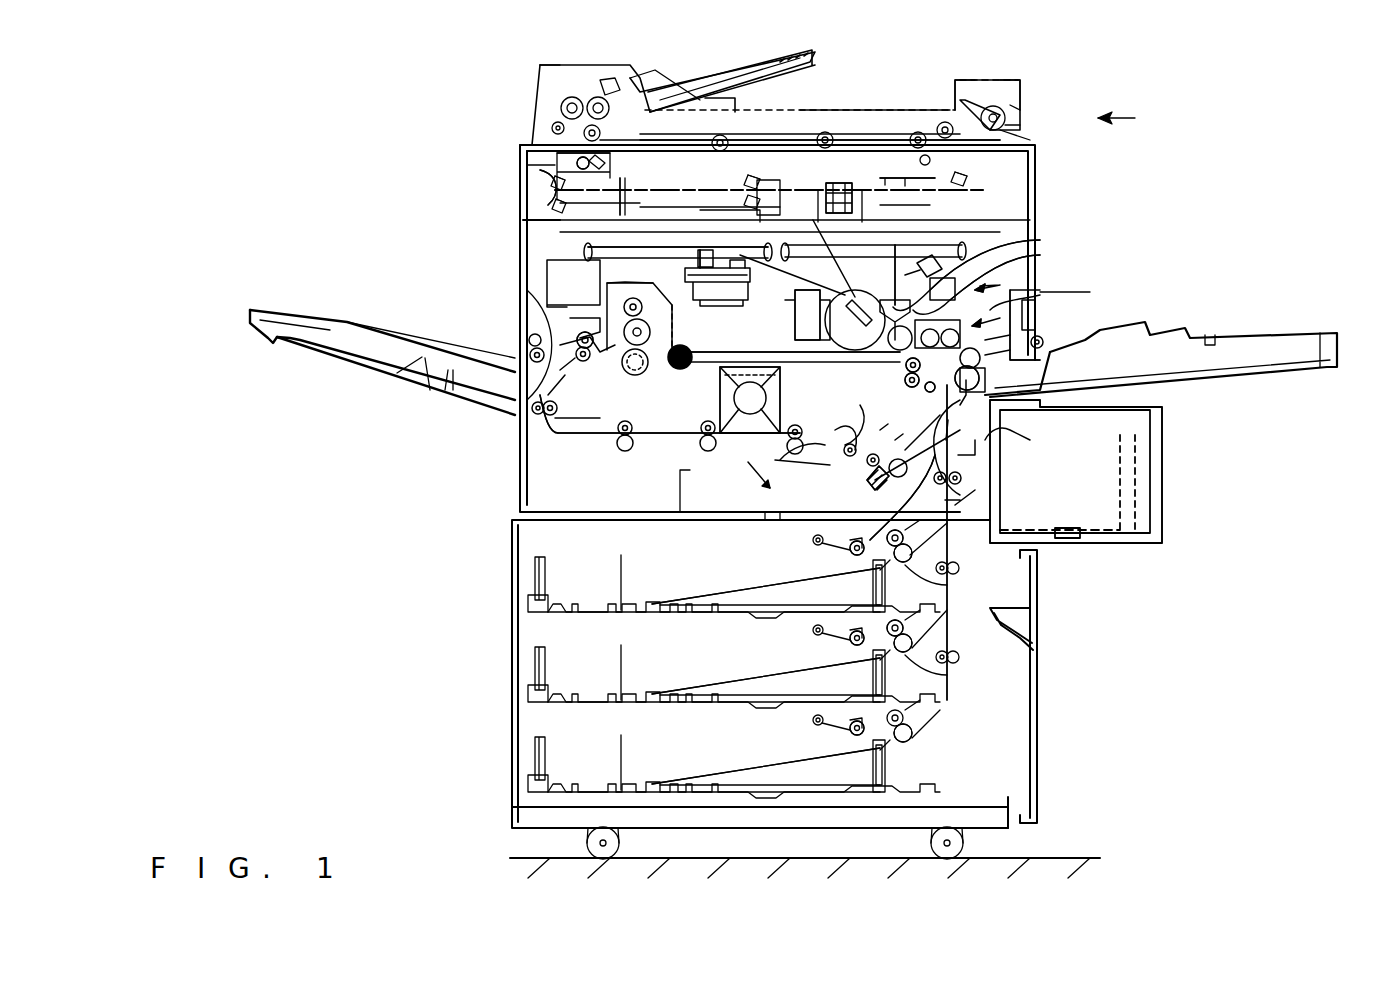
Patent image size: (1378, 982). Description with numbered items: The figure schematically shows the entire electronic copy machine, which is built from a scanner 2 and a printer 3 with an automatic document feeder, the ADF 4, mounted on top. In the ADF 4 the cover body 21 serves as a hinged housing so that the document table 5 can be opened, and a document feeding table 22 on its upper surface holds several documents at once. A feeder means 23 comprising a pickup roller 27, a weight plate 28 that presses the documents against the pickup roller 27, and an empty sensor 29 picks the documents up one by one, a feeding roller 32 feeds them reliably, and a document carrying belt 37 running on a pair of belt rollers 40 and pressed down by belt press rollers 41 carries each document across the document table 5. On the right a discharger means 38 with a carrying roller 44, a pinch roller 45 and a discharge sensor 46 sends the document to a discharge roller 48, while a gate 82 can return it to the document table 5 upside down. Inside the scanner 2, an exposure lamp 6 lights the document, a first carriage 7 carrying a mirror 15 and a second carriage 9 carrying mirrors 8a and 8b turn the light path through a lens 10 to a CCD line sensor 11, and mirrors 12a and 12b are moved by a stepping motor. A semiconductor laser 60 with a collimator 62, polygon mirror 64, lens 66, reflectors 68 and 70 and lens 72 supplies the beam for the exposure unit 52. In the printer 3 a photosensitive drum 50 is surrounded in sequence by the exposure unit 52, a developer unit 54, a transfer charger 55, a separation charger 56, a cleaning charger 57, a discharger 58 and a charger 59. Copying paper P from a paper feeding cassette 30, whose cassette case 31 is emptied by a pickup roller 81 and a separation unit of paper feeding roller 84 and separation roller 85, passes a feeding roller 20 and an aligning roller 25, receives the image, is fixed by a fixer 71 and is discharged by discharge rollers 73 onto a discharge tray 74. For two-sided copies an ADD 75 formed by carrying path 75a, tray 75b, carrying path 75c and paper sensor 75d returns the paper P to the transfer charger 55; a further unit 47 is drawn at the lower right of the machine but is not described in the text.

The scanner 2 is at (1112, 296).
The printer 3 is at (1089, 327).
The ADF (automatic document feeder) 4 is at (1162, 114).
The document table 5 is at (793, 138).
The exposure lamp 6 is at (604, 160).
The first carriage 7 is at (550, 166).
The mirror 8a is at (555, 205).
The mirror 8b is at (550, 182).
The second carriage 9 is at (546, 203).
The lens 10 is at (855, 176).
The CCD line sensor 11 is at (900, 205).
The mirror 12a is at (752, 184).
The mirror 12b is at (1000, 185).
The mirror 15 is at (635, 190).
The feeding roller 20 is at (947, 495).
The cover body 21 is at (636, 80).
The document feeding table 22 is at (762, 82).
The feeder means 23 is at (542, 84).
The aligning roller 25 is at (934, 392).
The pickup roller 27 is at (585, 100).
The weight plate 28 is at (606, 85).
The empty sensor 29 is at (600, 96).
The paper feeding cassette 30 is at (714, 664).
The cassette case 31 is at (727, 612).
The feeding roller 32 is at (552, 122).
The document carrying belt 37 is at (885, 125).
The discharger means 38 is at (1020, 90).
The belt roller 40 is at (600, 128).
The belt press roller 41 is at (730, 136).
The carrying roller 44 is at (1020, 108).
The pinch roller 45 is at (1025, 138).
The discharge sensor 46 is at (1022, 122).
The sorter bin 47 is at (1106, 532).
The discharge roller 48 is at (970, 100).
The photosensitive drum 50 is at (822, 365).
The exposure unit 52 is at (1040, 270).
The developer unit 54 is at (913, 392).
The transfer charger 55 is at (905, 370).
The separation charger 56 is at (845, 368).
The cleaning charger 57 is at (810, 345).
The discharger 58 is at (790, 322).
The charger 59 is at (812, 230).
The semiconductor laser 60 is at (690, 260).
The collimator 62 is at (728, 222).
The polygon mirror 64 is at (690, 292).
The lens 66 is at (750, 245).
The reflector 68 is at (1038, 237).
The reflector 70 is at (1040, 255).
The fixer 71 is at (588, 352).
The lens 72 is at (905, 265).
The discharge roller 73 is at (535, 320).
The discharge tray 74 is at (312, 320).
The ADD (automatic duplexing device) 75 is at (770, 488).
The carrying path 75a is at (554, 432).
The tray 75b is at (745, 508).
The carrying path 75c is at (960, 462).
The paper sensor 75d is at (772, 521).
The pickup roller 81 is at (857, 556).
The gate 82 is at (995, 106).
The paper feeding roller 84 is at (943, 575).
The separation roller 85 is at (872, 480).
The copying paper P is at (784, 684).